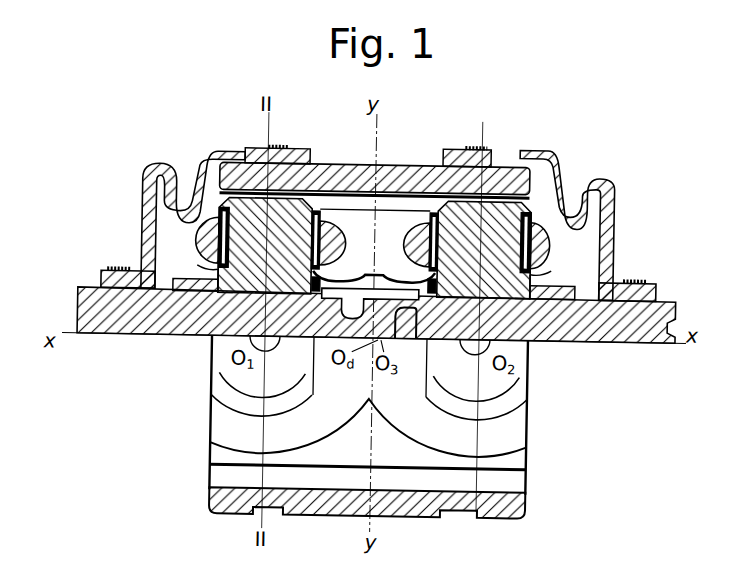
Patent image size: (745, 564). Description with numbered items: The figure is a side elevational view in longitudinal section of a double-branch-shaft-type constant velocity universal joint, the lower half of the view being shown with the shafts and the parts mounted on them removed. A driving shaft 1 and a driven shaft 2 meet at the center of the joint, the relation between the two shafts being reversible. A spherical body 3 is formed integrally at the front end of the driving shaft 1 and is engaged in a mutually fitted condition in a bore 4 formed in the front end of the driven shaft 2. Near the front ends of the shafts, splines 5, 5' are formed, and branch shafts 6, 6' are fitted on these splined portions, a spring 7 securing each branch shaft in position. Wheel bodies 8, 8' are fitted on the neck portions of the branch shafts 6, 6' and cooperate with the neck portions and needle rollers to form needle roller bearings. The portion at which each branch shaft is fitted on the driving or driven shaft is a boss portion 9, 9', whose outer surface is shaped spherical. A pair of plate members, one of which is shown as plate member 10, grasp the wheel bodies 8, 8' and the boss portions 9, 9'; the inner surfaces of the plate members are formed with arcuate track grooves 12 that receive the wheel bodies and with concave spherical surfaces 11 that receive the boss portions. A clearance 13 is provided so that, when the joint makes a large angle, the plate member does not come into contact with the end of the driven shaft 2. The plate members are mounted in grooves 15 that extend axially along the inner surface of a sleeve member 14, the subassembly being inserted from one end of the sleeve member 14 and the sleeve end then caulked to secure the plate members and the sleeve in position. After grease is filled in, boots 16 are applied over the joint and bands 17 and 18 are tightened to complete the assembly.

The driving shaft 1 is at (118, 339).
The driven shaft 2 is at (627, 339).
The spherical body 3 is at (398, 339).
The bore 4 is at (433, 339).
The spline 5 is at (205, 319).
The spline 5' is at (537, 324).
The branch shaft 6 is at (266, 204).
The branch shaft 6' is at (485, 205).
The spring 7 is at (208, 281).
The wheel body 8 is at (193, 239).
The wheel body 8' is at (556, 246).
The boss portion 9 is at (193, 256).
The boss portion 9' is at (556, 262).
The plate member 10 is at (389, 222).
The concave spherical surface 11 is at (213, 385).
The arcuate track groove 12 is at (220, 427).
The clearance 13 is at (336, 391).
The sleeve member 14 is at (337, 168).
The groove 15 is at (226, 471).
The boot 16 is at (140, 202).
The band 17 is at (279, 149).
The band 18 is at (125, 272).